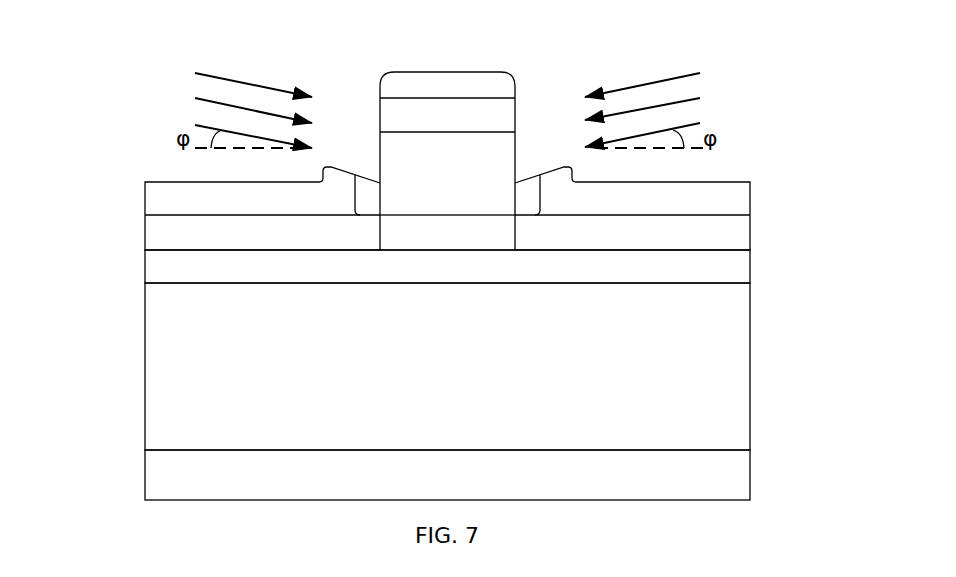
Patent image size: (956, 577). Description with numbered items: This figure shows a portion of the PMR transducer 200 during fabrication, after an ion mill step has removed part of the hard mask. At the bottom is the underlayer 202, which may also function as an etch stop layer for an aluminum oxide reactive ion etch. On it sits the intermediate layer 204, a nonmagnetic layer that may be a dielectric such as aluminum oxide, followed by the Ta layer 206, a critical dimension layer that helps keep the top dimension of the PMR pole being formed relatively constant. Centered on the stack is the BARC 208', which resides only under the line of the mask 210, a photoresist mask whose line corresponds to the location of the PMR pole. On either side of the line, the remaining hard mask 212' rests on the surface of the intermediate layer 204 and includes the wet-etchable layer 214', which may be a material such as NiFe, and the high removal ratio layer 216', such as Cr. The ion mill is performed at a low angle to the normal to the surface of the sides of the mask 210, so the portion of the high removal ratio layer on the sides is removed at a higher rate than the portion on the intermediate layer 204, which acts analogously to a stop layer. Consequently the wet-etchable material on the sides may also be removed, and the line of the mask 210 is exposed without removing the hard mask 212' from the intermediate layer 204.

The PMR transducer 200 is at (468, 42).
The underlayer 202 is at (750, 487).
The intermediate layer 204 is at (145, 368).
The Ta layer 206 is at (752, 273).
The BARC 208' is at (286, 263).
The mask 210 is at (517, 148).
The hard mask 212' is at (461, 161).
The wet-etchable layer 214' is at (431, 165).
The high removal ratio layer 216' is at (449, 128).